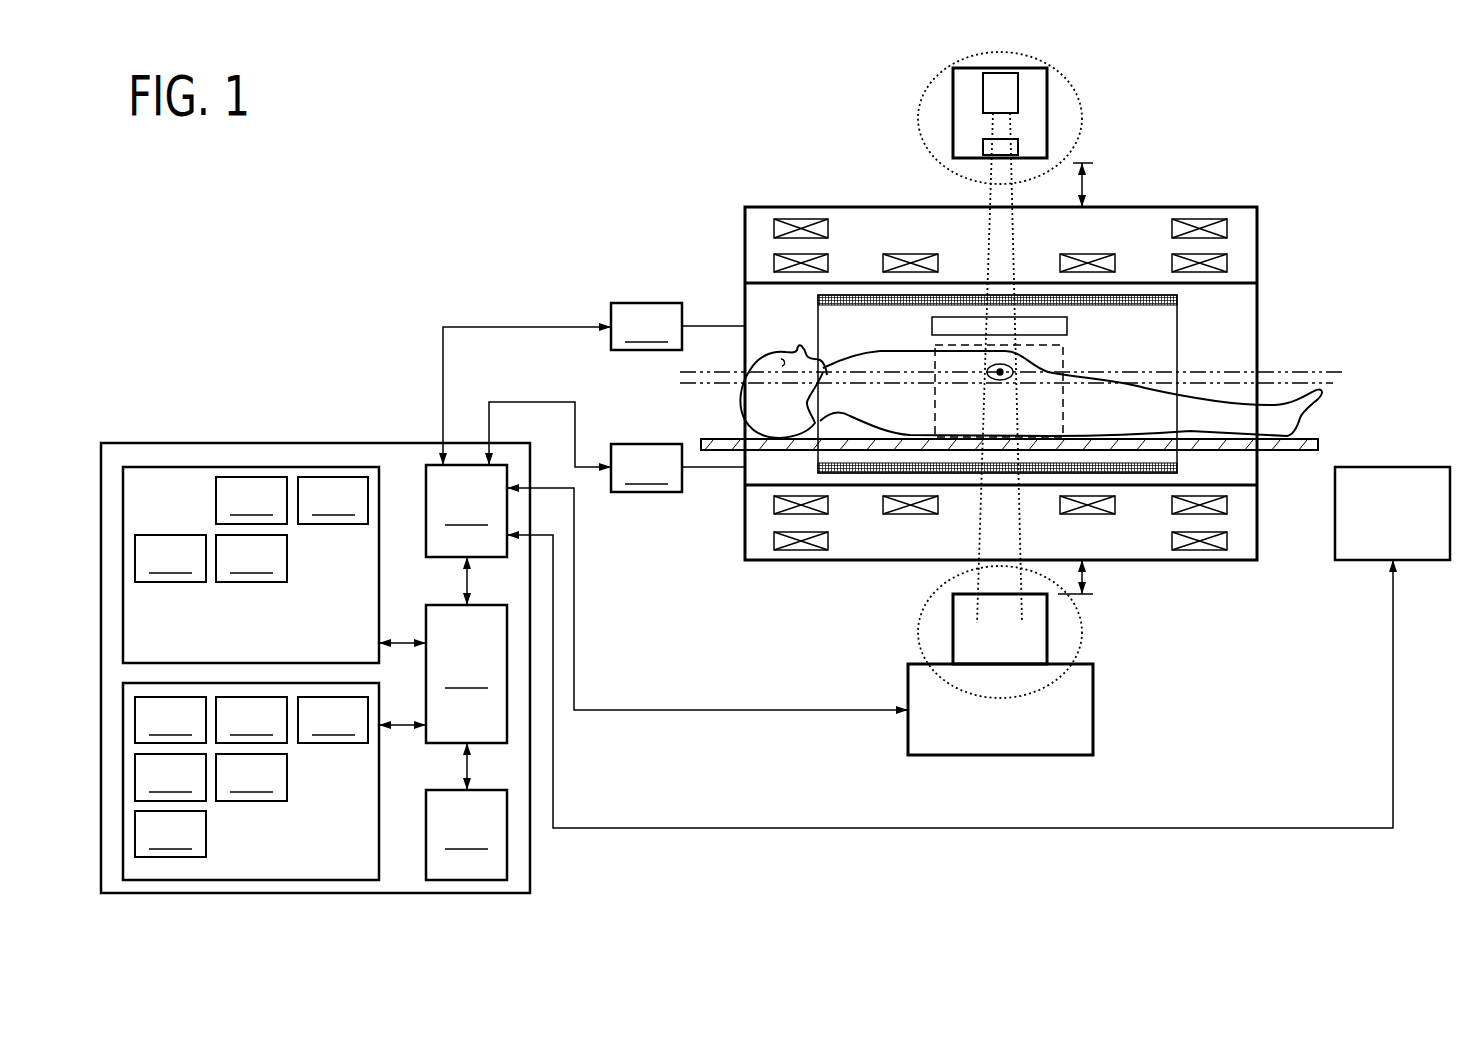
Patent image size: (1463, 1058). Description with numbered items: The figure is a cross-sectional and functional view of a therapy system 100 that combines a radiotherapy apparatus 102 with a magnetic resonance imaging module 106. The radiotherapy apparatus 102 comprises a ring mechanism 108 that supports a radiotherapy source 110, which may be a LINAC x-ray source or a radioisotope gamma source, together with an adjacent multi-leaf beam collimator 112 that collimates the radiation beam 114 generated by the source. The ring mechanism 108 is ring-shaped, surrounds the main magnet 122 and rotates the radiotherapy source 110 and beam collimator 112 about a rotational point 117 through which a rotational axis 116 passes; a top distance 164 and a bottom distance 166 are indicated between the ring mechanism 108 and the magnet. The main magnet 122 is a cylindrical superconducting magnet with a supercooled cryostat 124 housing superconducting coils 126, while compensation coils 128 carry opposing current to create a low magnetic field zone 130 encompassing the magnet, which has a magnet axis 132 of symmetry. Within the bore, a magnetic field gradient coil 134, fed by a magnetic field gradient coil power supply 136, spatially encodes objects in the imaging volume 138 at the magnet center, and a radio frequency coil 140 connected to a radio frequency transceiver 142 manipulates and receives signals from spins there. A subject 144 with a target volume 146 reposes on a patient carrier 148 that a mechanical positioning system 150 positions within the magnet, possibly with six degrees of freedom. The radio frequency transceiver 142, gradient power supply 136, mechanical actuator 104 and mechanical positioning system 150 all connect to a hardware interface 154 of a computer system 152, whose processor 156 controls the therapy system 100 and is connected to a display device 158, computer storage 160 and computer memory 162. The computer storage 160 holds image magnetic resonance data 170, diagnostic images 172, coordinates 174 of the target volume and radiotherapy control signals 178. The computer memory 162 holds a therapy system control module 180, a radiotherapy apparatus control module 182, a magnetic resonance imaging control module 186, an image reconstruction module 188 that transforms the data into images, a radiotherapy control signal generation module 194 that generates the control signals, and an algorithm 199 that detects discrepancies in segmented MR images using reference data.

The therapy system 100 is at (360, 260).
The radiotherapy apparatus 102 is at (1130, 133).
The mechanical actuator 104 is at (1093, 730).
The magnetic resonance imaging module 106 is at (1295, 283).
The ring mechanism 108 is at (1047, 93).
The radiotherapy source 110 is at (983, 90).
The multi-leaf beam collimator 112 is at (983, 148).
The radiation beam 114 is at (1000, 233).
The rotational axis 116 is at (1327, 372).
The rotational point 117 is at (987, 377).
The main magnet 122 is at (1240, 207).
The cryostat 124 is at (763, 215).
The superconducting coils 126 is at (883, 263).
The compensation coils 128 is at (774, 228).
The low magnetic field zone 130 is at (1081, 111).
The magnet axis 132 is at (1333, 387).
The magnetic field gradient coil 134 is at (1178, 465).
The magnetic field gradient coil power supply 136 is at (678, 468).
The imaging volume 138 is at (930, 368).
The radio frequency coil 140 is at (1067, 326).
The radio frequency transceiver 142 is at (678, 326).
The subject 144 is at (753, 405).
The target volume 146 is at (1063, 408).
The patient carrier 148 is at (713, 443).
The mechanical positioning system 150 is at (1393, 467).
The computer system 152 is at (390, 443).
The hardware interface 154 is at (466, 511).
The processor 156 is at (466, 674).
The display device 158 is at (466, 835).
The computer storage 160 is at (233, 467).
The computer memory 162 is at (235, 683).
The top distance 164 is at (1090, 183).
The bottom distance 166 is at (1093, 590).
The image magnetic resonance data 170 is at (251, 500).
The diagnostic images 172 is at (333, 500).
The coordinates of the target volume 174 is at (170, 558).
The radiotherapy control signals 178 is at (251, 558).
The therapy system control module 180 is at (170, 720).
The radiotherapy apparatus control module 182 is at (251, 720).
The magnetic resonance imaging control module 186 is at (333, 720).
The image reconstruction module 188 is at (170, 777).
The radiotherapy control signal generation module 194 is at (251, 777).
The algorithm 199 is at (170, 834).